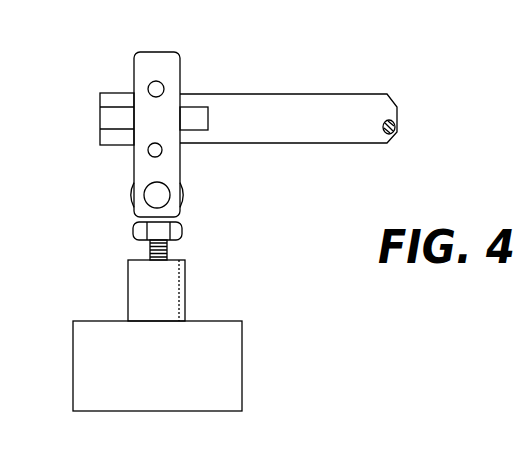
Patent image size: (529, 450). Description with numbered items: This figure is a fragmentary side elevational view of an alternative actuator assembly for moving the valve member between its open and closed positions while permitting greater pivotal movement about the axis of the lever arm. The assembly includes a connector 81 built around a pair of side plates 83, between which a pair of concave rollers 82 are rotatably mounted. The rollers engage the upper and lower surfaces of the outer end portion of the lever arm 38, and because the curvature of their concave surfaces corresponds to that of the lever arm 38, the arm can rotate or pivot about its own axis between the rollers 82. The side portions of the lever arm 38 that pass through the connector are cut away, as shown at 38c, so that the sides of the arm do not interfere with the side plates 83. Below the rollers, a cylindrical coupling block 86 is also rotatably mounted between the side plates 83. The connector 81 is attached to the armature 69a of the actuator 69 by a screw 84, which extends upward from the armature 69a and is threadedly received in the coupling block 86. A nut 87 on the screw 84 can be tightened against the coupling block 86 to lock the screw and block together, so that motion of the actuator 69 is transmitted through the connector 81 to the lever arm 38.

The connector 81 is at (103, 86).
The side plates 83 is at (145, 56).
The concave rollers 82 is at (164, 88).
The cylindrical coupling block 86 is at (131, 188).
The cut-away side portions of lever arm 38c is at (108, 117).
The lever arm 38 is at (317, 107).
The nut 87 is at (183, 232).
The screw 84 is at (141, 250).
The armature 69a is at (184, 273).
The actuator 69 is at (120, 336).